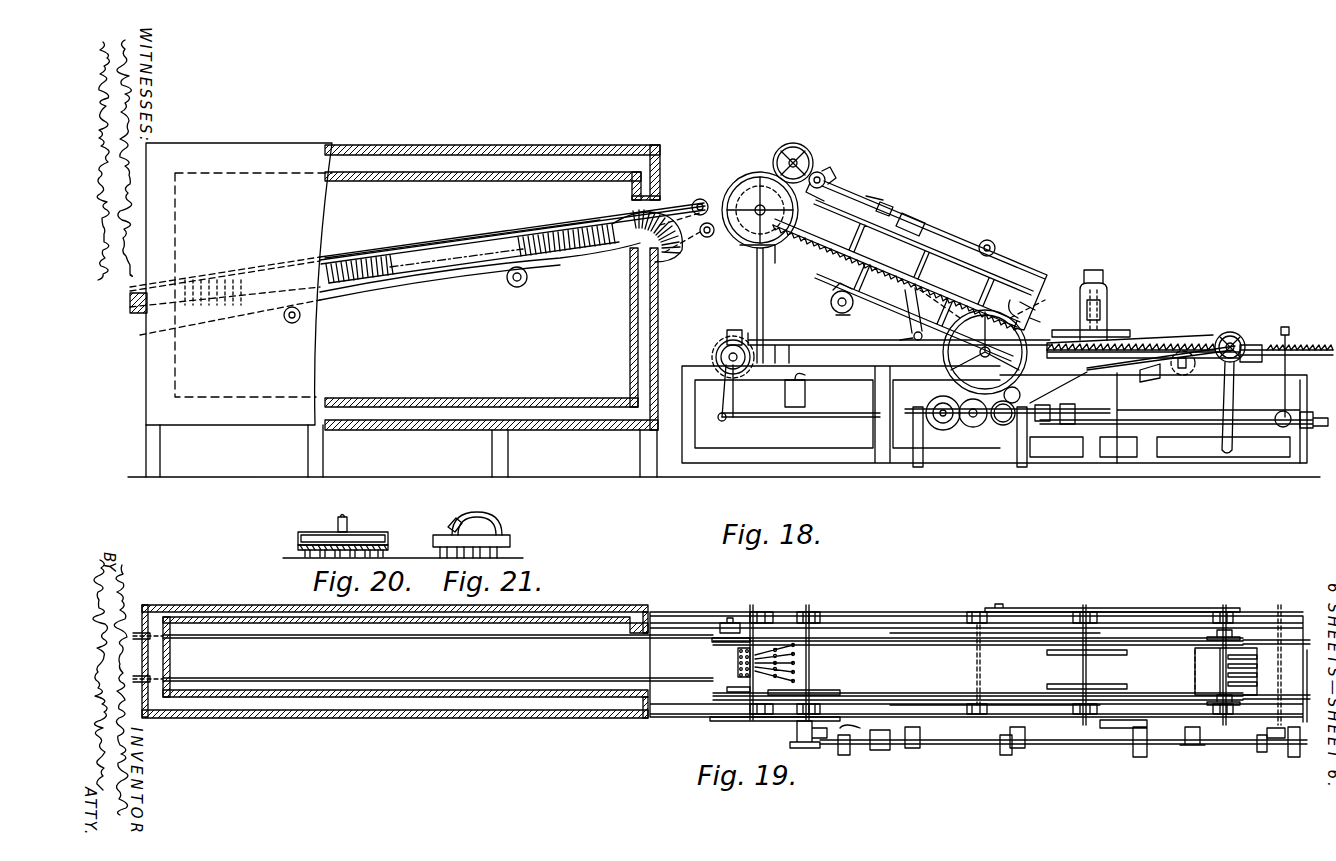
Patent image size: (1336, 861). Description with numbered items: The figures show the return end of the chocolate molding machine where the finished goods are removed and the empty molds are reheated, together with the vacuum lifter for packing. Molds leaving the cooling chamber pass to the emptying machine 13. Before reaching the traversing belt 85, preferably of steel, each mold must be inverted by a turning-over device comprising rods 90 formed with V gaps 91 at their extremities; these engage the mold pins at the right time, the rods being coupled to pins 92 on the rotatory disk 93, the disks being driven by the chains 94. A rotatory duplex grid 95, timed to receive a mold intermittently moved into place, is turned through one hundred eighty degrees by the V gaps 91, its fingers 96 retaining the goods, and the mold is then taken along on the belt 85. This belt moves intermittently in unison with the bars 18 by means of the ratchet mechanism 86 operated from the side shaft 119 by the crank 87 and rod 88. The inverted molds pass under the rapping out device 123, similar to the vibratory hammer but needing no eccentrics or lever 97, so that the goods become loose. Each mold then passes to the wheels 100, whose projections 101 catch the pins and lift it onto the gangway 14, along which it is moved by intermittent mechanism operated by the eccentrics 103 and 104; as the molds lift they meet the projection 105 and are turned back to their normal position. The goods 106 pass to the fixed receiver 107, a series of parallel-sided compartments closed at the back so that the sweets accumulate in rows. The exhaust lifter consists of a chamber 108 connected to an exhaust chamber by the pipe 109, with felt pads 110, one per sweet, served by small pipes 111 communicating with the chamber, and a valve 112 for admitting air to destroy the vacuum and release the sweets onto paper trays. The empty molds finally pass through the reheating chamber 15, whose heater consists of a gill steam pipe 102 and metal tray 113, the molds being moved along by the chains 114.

In FIG. 18, the emptying machine 13 is at (1130, 340).
In FIG. 18, the gangway 14 is at (912, 262).
In FIG. 19, the gangway 14 is at (880, 666).
In FIG. 18, the reheating chamber 15 is at (422, 267).
In FIG. 18, the intermittent traversing mechanism bars 18 is at (1310, 348).
In FIG. 18, the traversing belt 85 is at (806, 320).
In FIG. 19, the traversing belt 85 is at (995, 669).
In FIG. 18, the ratchet mechanism 86 is at (738, 336).
In FIG. 18, the crank 87 is at (940, 398).
In FIG. 18, the rod 88 is at (862, 410).
In FIG. 18, the rods 90 is at (1288, 355).
In FIG. 18, the V gaps 91 is at (1250, 355).
In FIG. 18, the pins 92 is at (1228, 336).
In FIG. 18, the rotatory disk 93 is at (1226, 362).
In FIG. 19, the rotatory disk 93 is at (1210, 630).
In FIG. 18, the chains 94 is at (1160, 345).
In FIG. 19, the chains 94 is at (1167, 612).
In FIG. 18, the rotatory duplex grid 95 is at (1258, 340).
In FIG. 19, the rotatory duplex grid 95 is at (1247, 655).
In FIG. 19, the fingers 96 is at (1260, 655).
In FIG. 18, the lever 97 is at (1100, 305).
In FIG. 18, the wheels 100 is at (1015, 296).
In FIG. 18, the projections 101 is at (1037, 314).
In FIG. 18, the gill steam pipe 102 is at (516, 279).
In FIG. 18, the eccentric 103 is at (990, 242).
In FIG. 18, the eccentric 104 is at (838, 298).
In FIG. 18, the projection 105 is at (1030, 300).
In FIG. 20, the goods 106 is at (305, 554).
In FIG. 21, the goods 106 is at (512, 556).
In FIG. 19, the goods 106 is at (795, 650).
In FIG. 18, the fixed receiver 107 is at (735, 336).
In FIG. 19, the fixed receiver 107 is at (738, 658).
In FIG. 20, the exhaust lifter chamber 108 is at (382, 533).
In FIG. 21, the pipe 109 is at (452, 522).
In FIG. 20, the felt pads 110 is at (390, 546).
In FIG. 20, the small pipes 111 is at (332, 532).
In FIG. 21, the valve 112 is at (468, 518).
In FIG. 18, the metal tray 113 is at (378, 252).
In FIG. 18, the chains 114 is at (438, 255).
In FIG. 19, the chains 114 is at (428, 641).
In FIG. 19, the side shaft 119 is at (960, 743).
In FIG. 19, the rapping out device 123 is at (1072, 655).